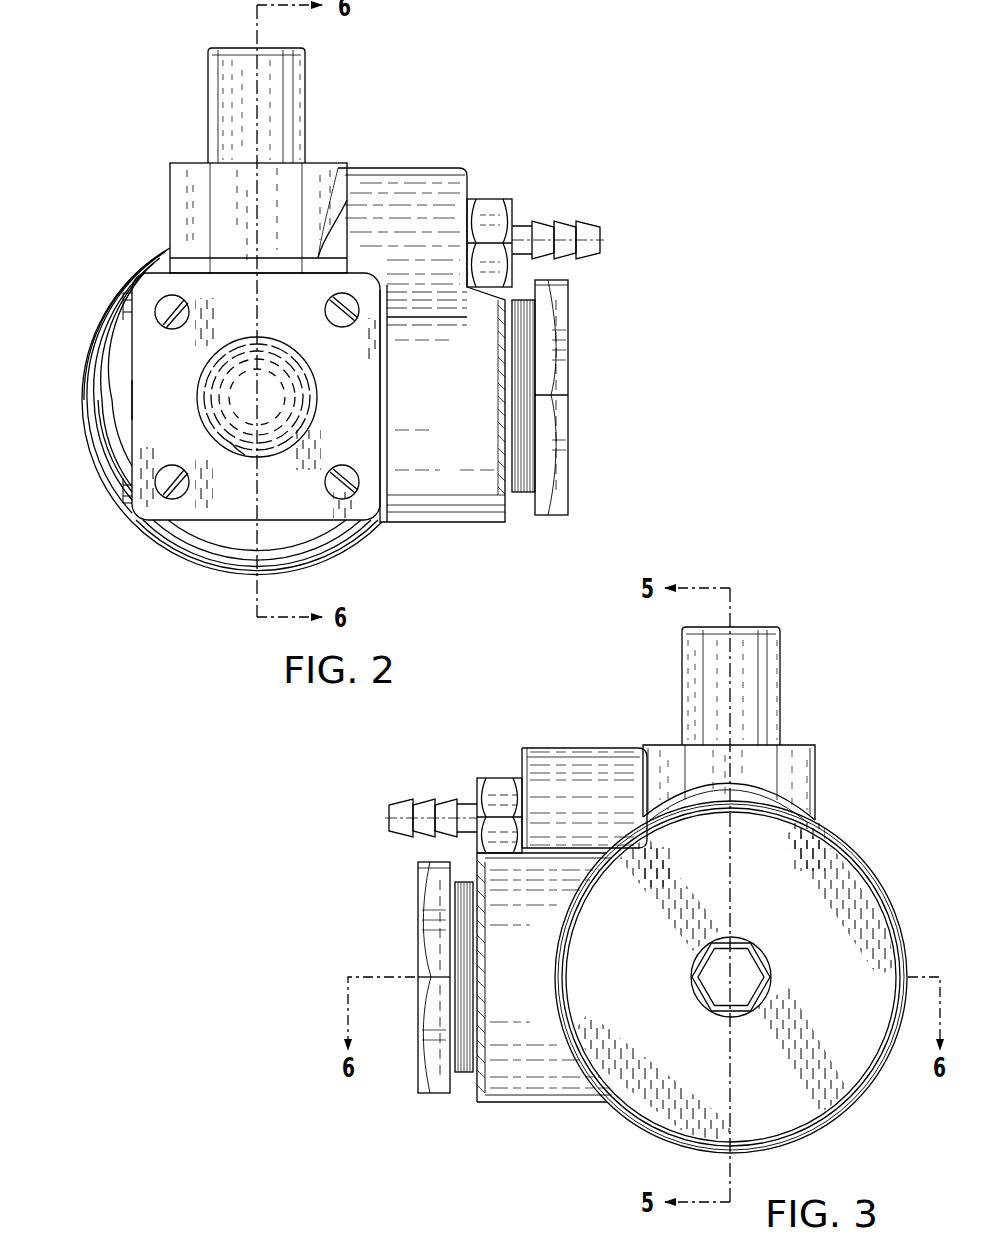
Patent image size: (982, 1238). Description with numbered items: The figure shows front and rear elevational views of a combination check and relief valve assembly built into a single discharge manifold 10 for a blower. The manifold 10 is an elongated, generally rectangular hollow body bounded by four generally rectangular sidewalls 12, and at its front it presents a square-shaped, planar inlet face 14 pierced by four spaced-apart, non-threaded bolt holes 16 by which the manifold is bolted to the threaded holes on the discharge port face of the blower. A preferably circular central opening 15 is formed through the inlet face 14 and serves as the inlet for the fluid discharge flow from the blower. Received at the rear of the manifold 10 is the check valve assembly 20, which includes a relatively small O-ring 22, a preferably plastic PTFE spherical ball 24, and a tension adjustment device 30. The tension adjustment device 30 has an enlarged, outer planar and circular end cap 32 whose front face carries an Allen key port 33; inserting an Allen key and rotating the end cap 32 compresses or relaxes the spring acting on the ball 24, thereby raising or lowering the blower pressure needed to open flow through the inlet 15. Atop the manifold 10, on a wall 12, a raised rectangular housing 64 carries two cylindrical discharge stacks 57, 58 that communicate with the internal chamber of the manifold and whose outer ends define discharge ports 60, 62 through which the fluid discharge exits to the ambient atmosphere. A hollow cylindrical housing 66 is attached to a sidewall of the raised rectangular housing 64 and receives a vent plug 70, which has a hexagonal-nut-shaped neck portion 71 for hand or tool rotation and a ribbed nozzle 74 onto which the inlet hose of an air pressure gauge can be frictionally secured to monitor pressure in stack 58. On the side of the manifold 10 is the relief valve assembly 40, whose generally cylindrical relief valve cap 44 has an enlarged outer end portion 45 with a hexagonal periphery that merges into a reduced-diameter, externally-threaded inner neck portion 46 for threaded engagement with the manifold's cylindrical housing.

In FIG. 2, the manifold 10 is at (130, 412).
In FIG. 2, the sidewall 12 is at (128, 362).
In FIG. 2, the inlet face 14 is at (162, 388).
In FIG. 2, the central opening 15 is at (240, 448).
In FIG. 2, the bolt holes 16 is at (160, 298).
In FIG. 2, the check valve assembly 20 is at (170, 552).
In FIG. 3, the check valve assembly 20 is at (665, 1143).
In FIG. 2, the O-ring 22 is at (442, 403).
In FIG. 3, the O-ring 22 is at (544, 977).
In FIG. 2, the spherical ball 24 is at (282, 423).
In FIG. 2, the tension adjustment device 30 is at (108, 303).
In FIG. 3, the end cap 32 is at (863, 1015).
In FIG. 3, the Allen key port 33 is at (762, 975).
In FIG. 2, the relief valve assembly 40 is at (580, 348).
In FIG. 3, the relief valve assembly 40 is at (358, 963).
In FIG. 2, the relief valve cap 44 is at (578, 395).
In FIG. 3, the relief valve cap 44 is at (415, 905).
In FIG. 2, the outer end portion 45 is at (553, 452).
In FIG. 3, the outer end portion 45 is at (430, 1040).
In FIG. 2, the inner neck portion 46 is at (512, 492).
In FIG. 3, the inner neck portion 46 is at (465, 1075).
In FIG. 2, the cylindrical stack 57 is at (285, 126).
In FIG. 3, the cylindrical stack 58 is at (765, 705).
In FIG. 2, the discharge port 60 is at (282, 50).
In FIG. 3, the discharge port 62 is at (768, 625).
In FIG. 2, the raised rectangular housing 64 is at (200, 190).
In FIG. 3, the raised rectangular housing 64 is at (792, 766).
In FIG. 2, the cylindrical housing 66 is at (395, 178).
In FIG. 3, the cylindrical housing 66 is at (575, 777).
In FIG. 2, the vent plug 70 is at (503, 195).
In FIG. 3, the vent plug 70 is at (503, 773).
In FIG. 3, the neck portion 71 is at (492, 800).
In FIG. 2, the ribbed nozzle 74 is at (542, 233).
In FIG. 3, the ribbed nozzle 74 is at (400, 820).